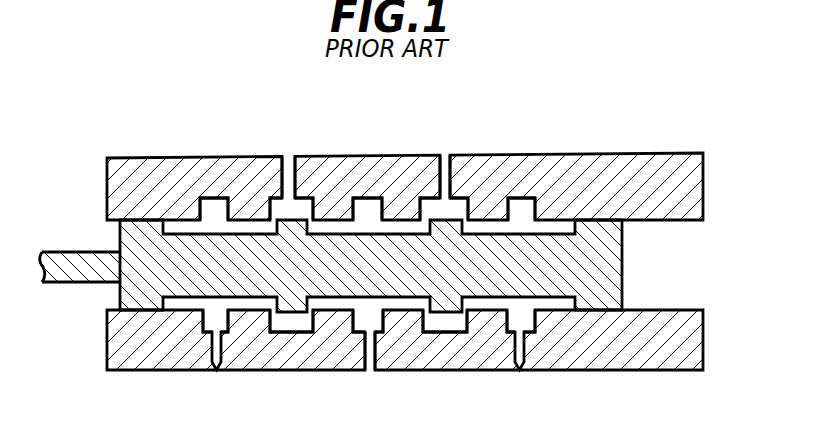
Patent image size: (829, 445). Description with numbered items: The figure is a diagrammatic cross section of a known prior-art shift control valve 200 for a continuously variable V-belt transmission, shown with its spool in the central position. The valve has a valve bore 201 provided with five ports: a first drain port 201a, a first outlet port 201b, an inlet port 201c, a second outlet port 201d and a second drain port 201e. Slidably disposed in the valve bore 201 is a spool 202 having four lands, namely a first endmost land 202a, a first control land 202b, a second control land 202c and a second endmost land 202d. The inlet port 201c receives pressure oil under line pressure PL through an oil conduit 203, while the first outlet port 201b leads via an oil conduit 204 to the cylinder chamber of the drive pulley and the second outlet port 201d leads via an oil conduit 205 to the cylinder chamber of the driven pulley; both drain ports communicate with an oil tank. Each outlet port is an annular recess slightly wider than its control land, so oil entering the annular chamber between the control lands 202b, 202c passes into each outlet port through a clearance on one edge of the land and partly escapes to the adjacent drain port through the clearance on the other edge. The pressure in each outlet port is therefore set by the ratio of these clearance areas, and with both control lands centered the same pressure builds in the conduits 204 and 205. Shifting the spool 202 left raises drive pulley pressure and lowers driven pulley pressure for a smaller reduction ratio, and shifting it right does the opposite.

The shift control valve 200 is at (530, 157).
The valve bore 201 is at (181, 225).
The first drain port 201a is at (218, 200).
The first outlet port 201b is at (276, 200).
The inlet port 201c is at (368, 200).
The second outlet port 201d is at (428, 200).
The second drain port 201e is at (525, 201).
The spool 202 is at (187, 290).
The first endmost land 202a is at (147, 290).
The first control land 202b is at (287, 305).
The second control land 202c is at (450, 293).
The second endmost land 202d is at (600, 297).
The oil conduit 203 is at (373, 345).
The oil conduit 204 is at (295, 163).
The oil conduit 205 is at (452, 198).
The leakage drain passage PL is at (372, 363).